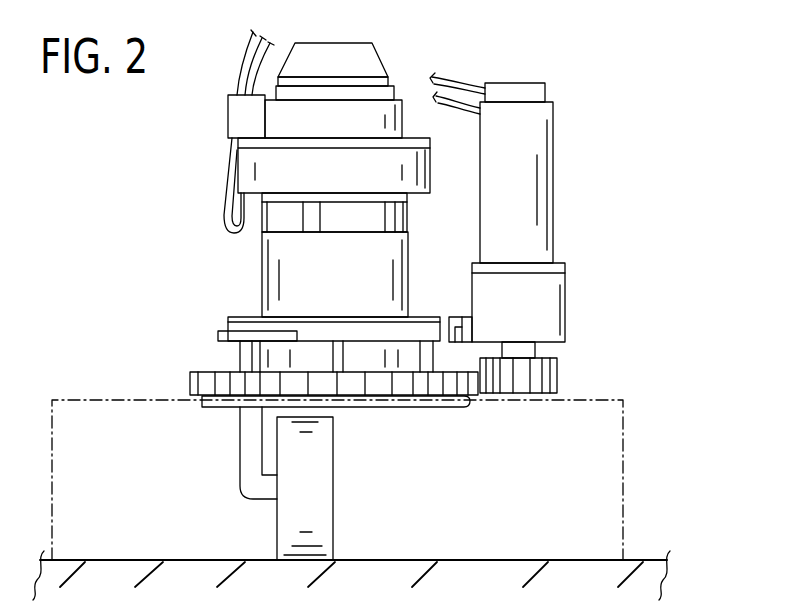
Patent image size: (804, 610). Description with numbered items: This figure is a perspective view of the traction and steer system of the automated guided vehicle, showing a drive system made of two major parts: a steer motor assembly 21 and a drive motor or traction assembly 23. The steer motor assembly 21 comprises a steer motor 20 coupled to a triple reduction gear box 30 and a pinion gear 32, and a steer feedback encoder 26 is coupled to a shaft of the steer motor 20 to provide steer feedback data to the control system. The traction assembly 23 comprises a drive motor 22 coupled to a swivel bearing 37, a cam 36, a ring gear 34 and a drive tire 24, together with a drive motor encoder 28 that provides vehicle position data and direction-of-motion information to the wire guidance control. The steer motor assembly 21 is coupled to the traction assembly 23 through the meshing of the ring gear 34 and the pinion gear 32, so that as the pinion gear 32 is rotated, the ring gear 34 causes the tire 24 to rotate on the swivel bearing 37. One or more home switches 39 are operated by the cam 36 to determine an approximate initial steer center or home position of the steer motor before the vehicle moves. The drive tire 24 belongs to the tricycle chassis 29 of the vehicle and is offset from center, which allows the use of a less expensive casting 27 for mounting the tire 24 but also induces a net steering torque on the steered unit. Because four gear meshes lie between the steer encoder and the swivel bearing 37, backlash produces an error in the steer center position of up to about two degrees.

The steer motor 20 is at (553, 180).
The steer motor assembly 21 is at (637, 226).
The drive motor 22 is at (262, 278).
The traction assembly 23 is at (216, 293).
The drive tire 24 is at (333, 480).
The steer feedback encoder 26 is at (545, 92).
The casting 27 is at (240, 497).
The drive motor encoder 28 is at (380, 63).
The chassis 29 is at (80, 400).
The triple reduction gear box 30 is at (565, 300).
The pinion gear 32 is at (557, 378).
The ring gear 34 is at (190, 383).
The cam 36 is at (218, 335).
The swivel bearing 37 is at (413, 407).
The home switch 39 is at (455, 317).